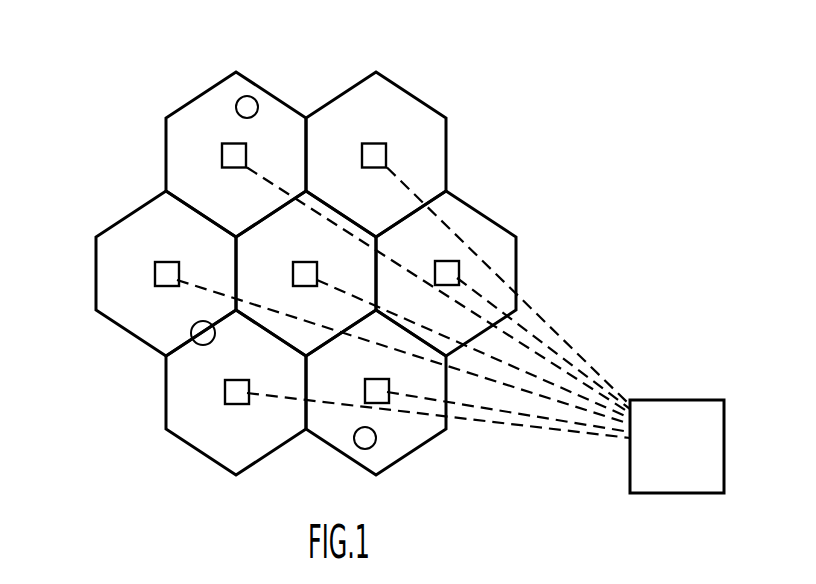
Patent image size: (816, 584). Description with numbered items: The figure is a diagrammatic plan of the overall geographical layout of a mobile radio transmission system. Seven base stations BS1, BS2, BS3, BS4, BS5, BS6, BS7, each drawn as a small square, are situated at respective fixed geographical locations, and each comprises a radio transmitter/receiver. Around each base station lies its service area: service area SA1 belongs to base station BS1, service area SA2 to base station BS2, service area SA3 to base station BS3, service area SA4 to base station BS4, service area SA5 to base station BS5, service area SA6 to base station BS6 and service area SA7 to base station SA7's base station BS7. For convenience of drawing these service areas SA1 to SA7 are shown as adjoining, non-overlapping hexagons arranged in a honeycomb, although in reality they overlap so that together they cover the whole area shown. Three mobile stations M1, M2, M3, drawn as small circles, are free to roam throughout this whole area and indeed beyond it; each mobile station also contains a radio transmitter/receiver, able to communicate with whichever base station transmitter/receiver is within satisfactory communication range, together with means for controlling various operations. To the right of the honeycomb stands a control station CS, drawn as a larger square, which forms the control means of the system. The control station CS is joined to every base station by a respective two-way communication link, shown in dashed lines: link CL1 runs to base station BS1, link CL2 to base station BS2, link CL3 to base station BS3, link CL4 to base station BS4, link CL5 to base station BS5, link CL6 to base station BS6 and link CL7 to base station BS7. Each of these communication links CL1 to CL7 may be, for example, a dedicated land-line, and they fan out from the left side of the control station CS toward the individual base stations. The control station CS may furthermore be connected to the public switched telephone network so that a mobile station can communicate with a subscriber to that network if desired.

The service area SA1 is at (208, 97).
The service area SA2 is at (407, 100).
The service area SA3 is at (488, 215).
The service area SA4 is at (407, 448).
The service area SA5 is at (188, 437).
The service area SA6 is at (95, 291).
The service area SA7 is at (348, 217).
The base station BS1 is at (221, 155).
The base station BS2 is at (361, 153).
The base station BS3 is at (435, 270).
The base station BS4 is at (365, 390).
The base station BS5 is at (225, 391).
The base station BS6 is at (155, 274).
The base station BS7 is at (293, 273).
The mobile station M1 is at (231, 22).
The mobile station M2 is at (354, 441).
The mobile station M3 is at (191, 332).
The communication link CL1 is at (575, 372).
The communication link CL2 is at (538, 314).
The communication link CL3 is at (537, 335).
The communication link CL4 is at (538, 418).
The communication link CL5 is at (582, 433).
The communication link CL6 is at (505, 390).
The communication link CL7 is at (592, 405).
The control station CS is at (627, 526).